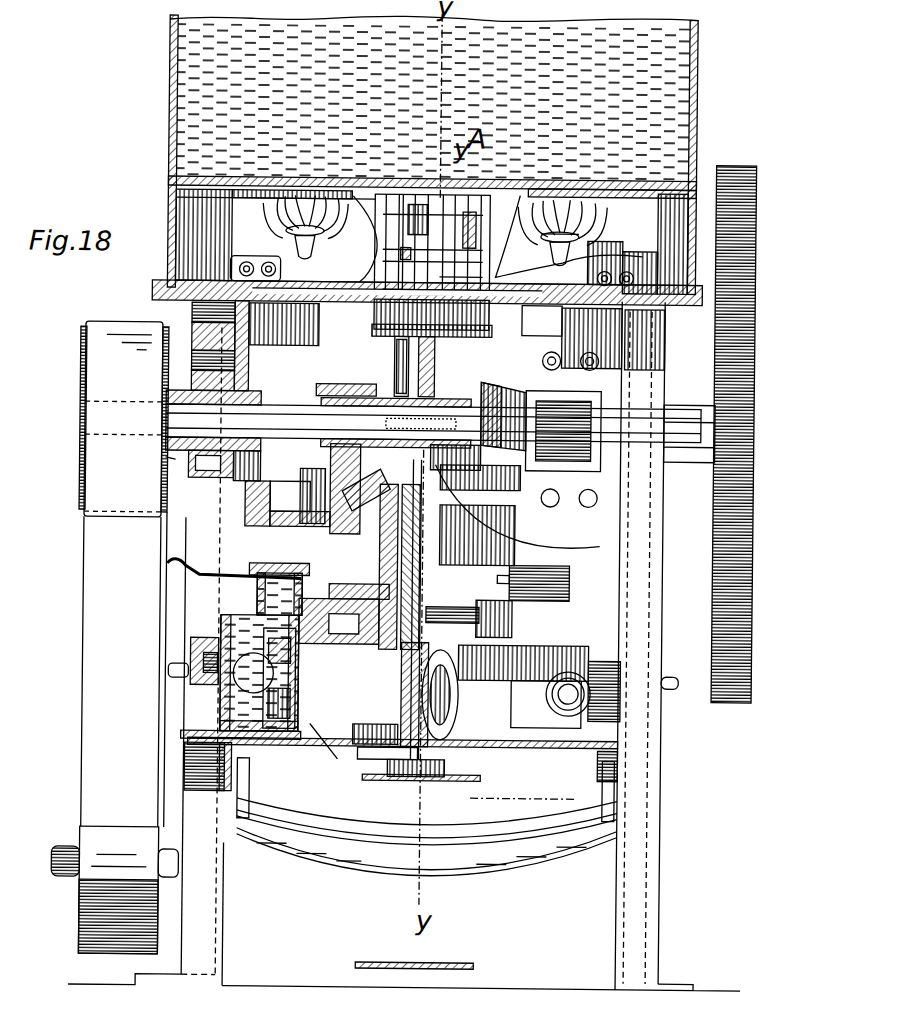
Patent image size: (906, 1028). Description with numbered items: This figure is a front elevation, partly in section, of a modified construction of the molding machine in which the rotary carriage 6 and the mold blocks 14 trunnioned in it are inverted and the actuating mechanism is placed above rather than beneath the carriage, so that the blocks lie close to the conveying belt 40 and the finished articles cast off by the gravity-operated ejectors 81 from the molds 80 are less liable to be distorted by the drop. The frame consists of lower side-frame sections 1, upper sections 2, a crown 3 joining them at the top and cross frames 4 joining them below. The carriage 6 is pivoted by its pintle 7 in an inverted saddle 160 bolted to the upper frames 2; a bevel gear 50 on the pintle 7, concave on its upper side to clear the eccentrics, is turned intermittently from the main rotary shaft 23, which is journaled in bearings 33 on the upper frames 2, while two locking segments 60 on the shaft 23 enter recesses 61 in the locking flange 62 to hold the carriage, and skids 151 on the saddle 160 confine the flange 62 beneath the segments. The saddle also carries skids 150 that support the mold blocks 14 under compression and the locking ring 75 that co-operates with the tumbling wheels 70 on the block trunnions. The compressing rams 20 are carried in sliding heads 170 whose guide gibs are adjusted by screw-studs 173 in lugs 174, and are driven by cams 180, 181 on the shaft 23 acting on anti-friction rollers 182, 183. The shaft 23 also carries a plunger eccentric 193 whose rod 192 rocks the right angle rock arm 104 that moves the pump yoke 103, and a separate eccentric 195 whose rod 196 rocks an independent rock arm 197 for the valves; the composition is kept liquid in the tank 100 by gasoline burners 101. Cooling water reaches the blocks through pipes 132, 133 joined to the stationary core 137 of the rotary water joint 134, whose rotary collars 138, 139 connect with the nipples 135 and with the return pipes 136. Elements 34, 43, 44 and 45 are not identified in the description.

The tank 100 is at (432, 154).
The gasoline burners 101 is at (307, 236).
The yoke 103 is at (470, 229).
The right angle rock arm 104 is at (437, 277).
The rod 196 is at (431, 273).
The independent rock arm 197 is at (437, 230).
The crown 3 is at (570, 300).
The anti-friction rollers 183 is at (375, 335).
The rod 192 is at (375, 315).
The sliding heads 170 is at (325, 392).
The cam 180 is at (393, 378).
The separate eccentric 195 is at (410, 390).
The screw-studs 173 is at (540, 318).
The plunger eccentric 193 is at (500, 393).
The main rotary shaft 23 is at (441, 426).
The gear wheel 44 is at (84, 352).
The bearings 33 is at (160, 458).
The locking flange 62 is at (165, 520).
The upper sections of side frames 2 is at (187, 528).
The anti-friction rollers 182 is at (175, 568).
The locking segments 60 is at (600, 370).
The inverted saddle 160 is at (378, 545).
The bevel gear 50 is at (392, 562).
The recesses 61 is at (443, 460).
The lugs 174 is at (575, 425).
The cam 181 is at (600, 406).
The gear 34 is at (743, 392).
The wheel face 45 is at (100, 628).
The skids 151 is at (177, 572).
The compressing rams 20 is at (240, 602).
The tumbling wheel 70 is at (360, 600).
The rotary mold-blocks 14 is at (700, 746).
The nipples 135 is at (354, 626).
The locking ring 75 is at (423, 618).
The pintle 7 is at (427, 610).
The ejectors 81 is at (187, 664).
The rotary carriage 6 is at (192, 700).
The rotary water joint 134 is at (432, 700).
The collar 138 is at (230, 746).
The pipe 132 is at (392, 718).
The pipe 133 is at (575, 745).
The collar 139 is at (238, 748).
The molds 80 is at (312, 725).
The stationary core 137 is at (418, 762).
The return pipes 136 is at (428, 781).
The conveying belt 40 is at (465, 962).
The skids 150 is at (187, 777).
The lower sections of side frames 1 is at (680, 833).
The pulley 43 is at (83, 812).
The cross frames 4 is at (426, 818).